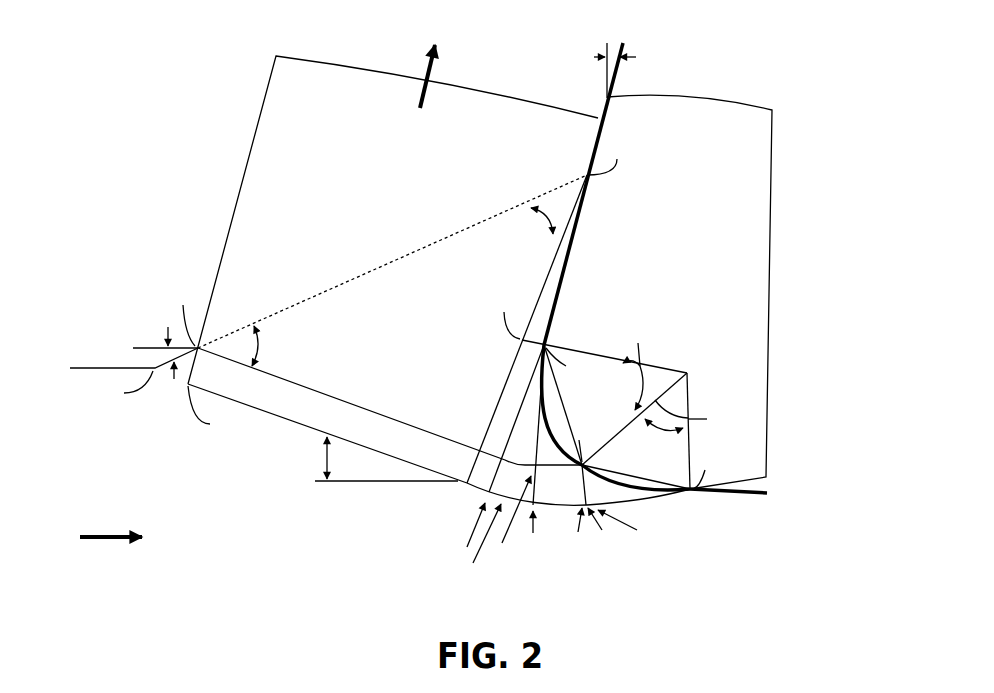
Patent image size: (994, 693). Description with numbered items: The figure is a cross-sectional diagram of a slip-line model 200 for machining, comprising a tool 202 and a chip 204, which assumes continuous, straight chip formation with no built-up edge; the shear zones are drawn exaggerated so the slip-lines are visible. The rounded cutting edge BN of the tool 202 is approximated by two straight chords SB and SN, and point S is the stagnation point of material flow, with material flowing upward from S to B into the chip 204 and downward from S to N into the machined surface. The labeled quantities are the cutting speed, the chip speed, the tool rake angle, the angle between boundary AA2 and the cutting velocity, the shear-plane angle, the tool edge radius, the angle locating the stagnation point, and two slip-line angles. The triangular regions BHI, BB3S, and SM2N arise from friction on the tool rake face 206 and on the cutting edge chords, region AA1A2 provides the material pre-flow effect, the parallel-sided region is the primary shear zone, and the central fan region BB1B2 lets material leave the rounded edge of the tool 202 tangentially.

The slip-line model 200 is at (159, 76).
The tool 202 is at (726, 195).
The chip 204 is at (384, 225).
The tool rake face 206 is at (571, 253).